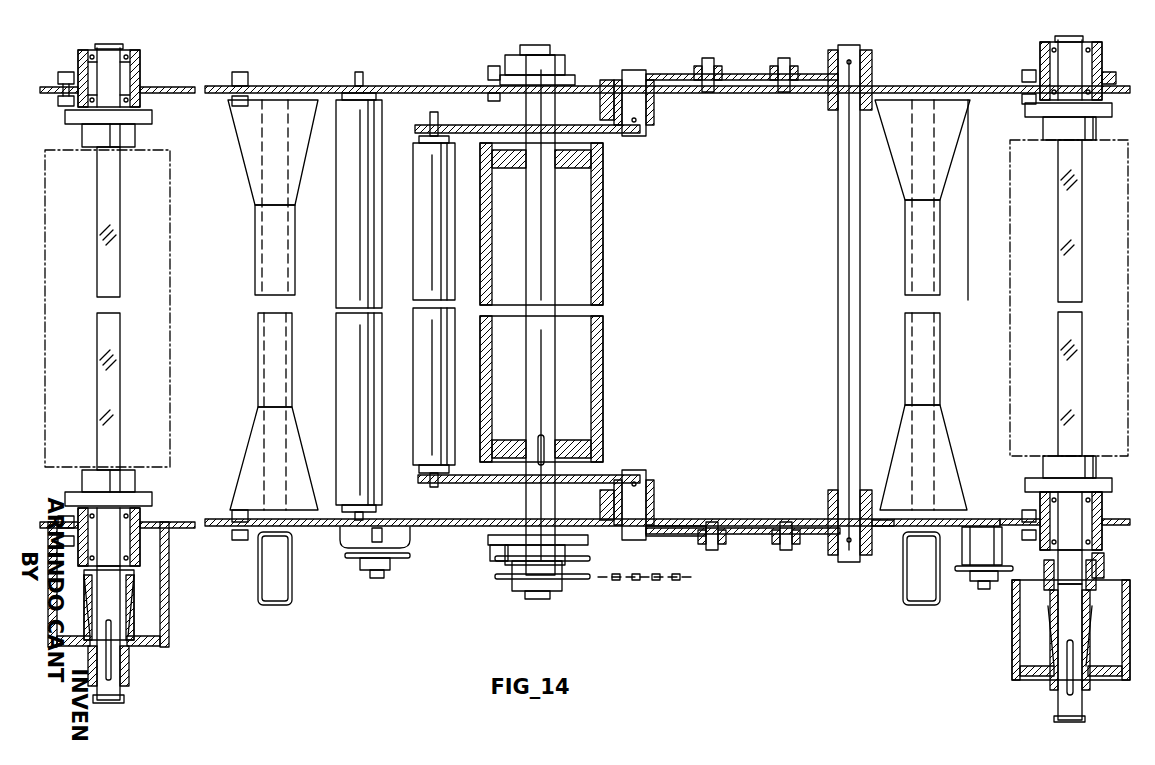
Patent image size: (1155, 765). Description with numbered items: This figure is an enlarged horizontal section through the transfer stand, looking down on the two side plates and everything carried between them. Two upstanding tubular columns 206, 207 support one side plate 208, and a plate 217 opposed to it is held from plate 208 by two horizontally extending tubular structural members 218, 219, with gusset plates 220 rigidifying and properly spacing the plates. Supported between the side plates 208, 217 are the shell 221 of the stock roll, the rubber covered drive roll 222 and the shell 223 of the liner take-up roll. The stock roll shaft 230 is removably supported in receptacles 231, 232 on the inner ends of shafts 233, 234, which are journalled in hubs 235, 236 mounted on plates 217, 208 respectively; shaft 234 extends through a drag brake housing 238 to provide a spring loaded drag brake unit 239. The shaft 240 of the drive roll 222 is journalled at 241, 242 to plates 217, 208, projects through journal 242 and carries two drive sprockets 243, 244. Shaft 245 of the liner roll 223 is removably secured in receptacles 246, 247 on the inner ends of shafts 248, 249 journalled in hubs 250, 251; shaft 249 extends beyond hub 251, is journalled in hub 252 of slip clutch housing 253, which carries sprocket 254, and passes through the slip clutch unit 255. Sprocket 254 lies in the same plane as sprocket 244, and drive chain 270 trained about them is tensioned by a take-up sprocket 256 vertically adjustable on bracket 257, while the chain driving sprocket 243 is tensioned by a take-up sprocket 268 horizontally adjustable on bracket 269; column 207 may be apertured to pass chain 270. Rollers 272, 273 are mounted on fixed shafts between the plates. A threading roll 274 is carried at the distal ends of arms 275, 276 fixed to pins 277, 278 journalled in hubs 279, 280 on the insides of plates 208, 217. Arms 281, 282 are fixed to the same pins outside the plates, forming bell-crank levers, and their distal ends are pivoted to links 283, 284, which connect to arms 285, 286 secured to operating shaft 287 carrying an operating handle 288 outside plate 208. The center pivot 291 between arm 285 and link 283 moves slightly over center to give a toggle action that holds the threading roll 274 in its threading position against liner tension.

The upstanding tubular column 206 is at (292, 600).
The upstanding tubular column 207 is at (905, 598).
The side plate 208 is at (215, 530).
The plate 217 is at (985, 85).
The horizontally extending tubular structural member 218 is at (258, 356).
The horizontally extending tubular structural member 219 is at (940, 346).
The gusset plate 220 is at (248, 475).
The shell of the stock roll 221 is at (170, 312).
The rubber covered drive roll 222 is at (605, 345).
The shell of the liner take-up roll 223 is at (1010, 262).
The stock roll shaft 230 is at (100, 360).
The receptacle 231 is at (90, 134).
The receptacle 232 is at (92, 481).
The shaft 233 is at (140, 78).
The shaft 234 is at (100, 545).
The hub 235 is at (75, 50).
The hub 236 is at (140, 556).
The drag brake housing 238 is at (169, 618).
The spring loaded drag brake unit 239 is at (150, 668).
The shaft 240 is at (548, 398).
The journal 241 is at (575, 68).
The journal 242 is at (498, 550).
The drive sprocket 243 is at (498, 560).
The drive sprocket 244 is at (498, 578).
The shaft of the liner roll 245 is at (1080, 404).
The receptacle 246 is at (1090, 132).
The receptacle 247 is at (1096, 470).
The shaft 248 is at (1090, 72).
The shaft 249 is at (1090, 538).
The hub 250 is at (1102, 52).
The hub 251 is at (1104, 554).
The hub of slip clutch housing 252 is at (1050, 592).
The slip clutch housing 253 is at (1012, 662).
The sprocket 254 is at (1035, 572).
The slip clutch unit 255 is at (1028, 698).
The take-up sprocket 256 is at (962, 585).
The bracket 257 is at (985, 548).
The take-up sprocket 268 is at (363, 572).
The bracket 269 is at (345, 550).
The drive chain 270 is at (660, 580).
The roller 272 is at (348, 345).
The roller 273 is at (968, 312).
The threading roll 274 is at (417, 365).
The arm 275 is at (458, 484).
The arm 276 is at (458, 126).
The pin 277 is at (650, 500).
The pin 278 is at (648, 108).
The hub 279 is at (606, 498).
The hub 280 is at (620, 108).
The arm 281 is at (672, 534).
The arm 282 is at (700, 68).
The link 283 is at (747, 545).
The link 284 is at (746, 73).
The arm 285 is at (812, 540).
The arm 286 is at (795, 68).
The operating shaft 287 is at (838, 388).
The operating handle 288 is at (876, 545).
The center pivot 291 is at (785, 556).